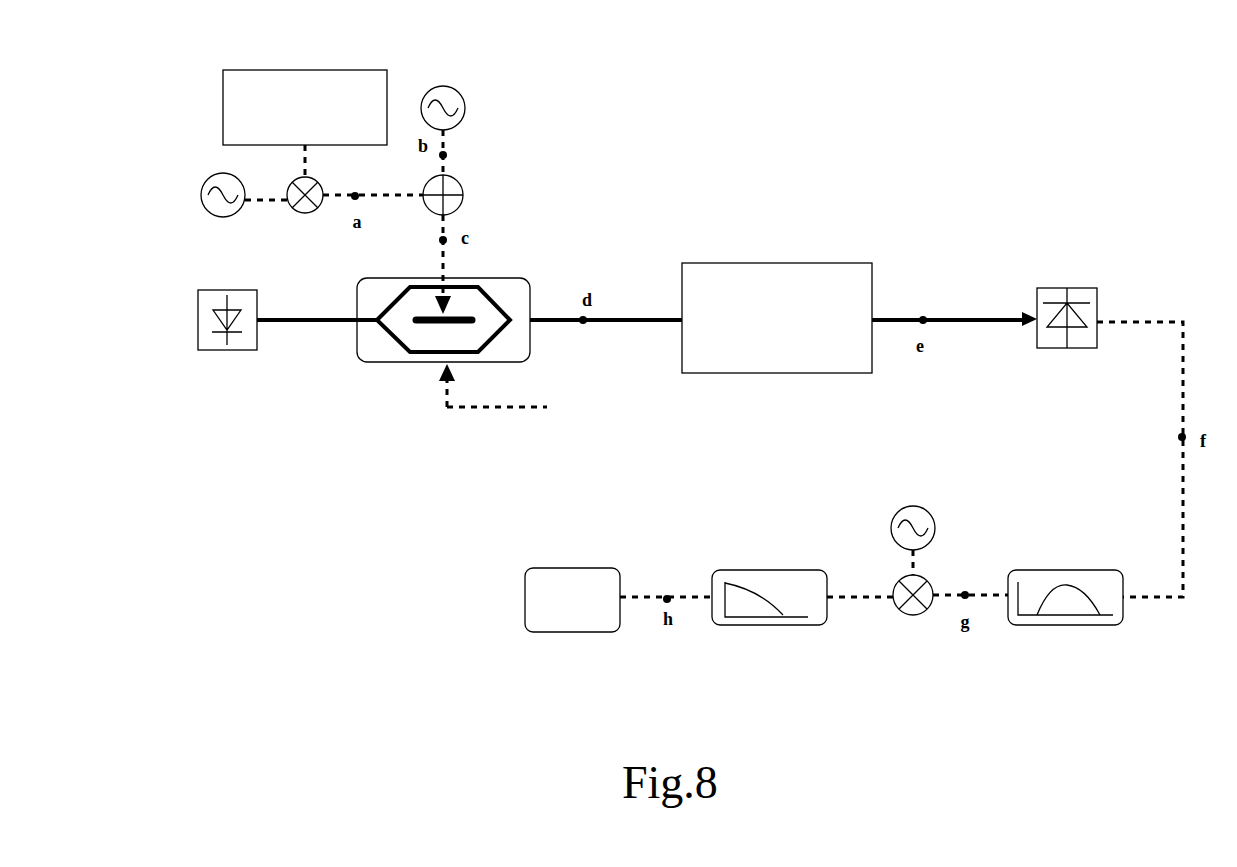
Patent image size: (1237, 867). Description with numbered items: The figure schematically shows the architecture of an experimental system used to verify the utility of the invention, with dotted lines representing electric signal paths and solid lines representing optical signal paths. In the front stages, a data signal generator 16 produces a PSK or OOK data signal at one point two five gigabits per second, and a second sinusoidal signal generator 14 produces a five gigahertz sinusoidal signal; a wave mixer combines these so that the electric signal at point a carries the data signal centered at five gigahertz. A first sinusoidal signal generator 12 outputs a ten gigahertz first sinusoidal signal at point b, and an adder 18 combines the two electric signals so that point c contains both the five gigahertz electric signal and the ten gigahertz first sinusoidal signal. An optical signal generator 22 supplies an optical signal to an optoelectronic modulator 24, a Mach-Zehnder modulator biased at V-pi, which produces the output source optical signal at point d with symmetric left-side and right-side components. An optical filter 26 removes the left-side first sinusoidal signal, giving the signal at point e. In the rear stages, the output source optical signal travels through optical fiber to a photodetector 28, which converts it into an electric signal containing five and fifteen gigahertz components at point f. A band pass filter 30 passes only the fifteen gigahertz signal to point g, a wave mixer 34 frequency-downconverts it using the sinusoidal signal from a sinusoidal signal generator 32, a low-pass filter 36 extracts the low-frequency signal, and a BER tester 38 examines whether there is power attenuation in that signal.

The first sinusoidal signal generator 12 is at (424, 124).
The second sinusoidal signal generator 14 is at (210, 187).
The data signal generator 16 is at (350, 70).
The wave mixer 18 is at (433, 217).
The optical signal generator 22 is at (213, 353).
The optoelectronic modulator 24 is at (380, 365).
The optical filter 26 is at (737, 373).
The photodetector 28 is at (1052, 350).
The band pass filter 30 is at (1070, 627).
The sinusoidal signal generator 32 is at (910, 507).
The wave mixer 34 is at (912, 618).
The low-pass filter 36 is at (767, 622).
The BER tester 38 is at (578, 630).